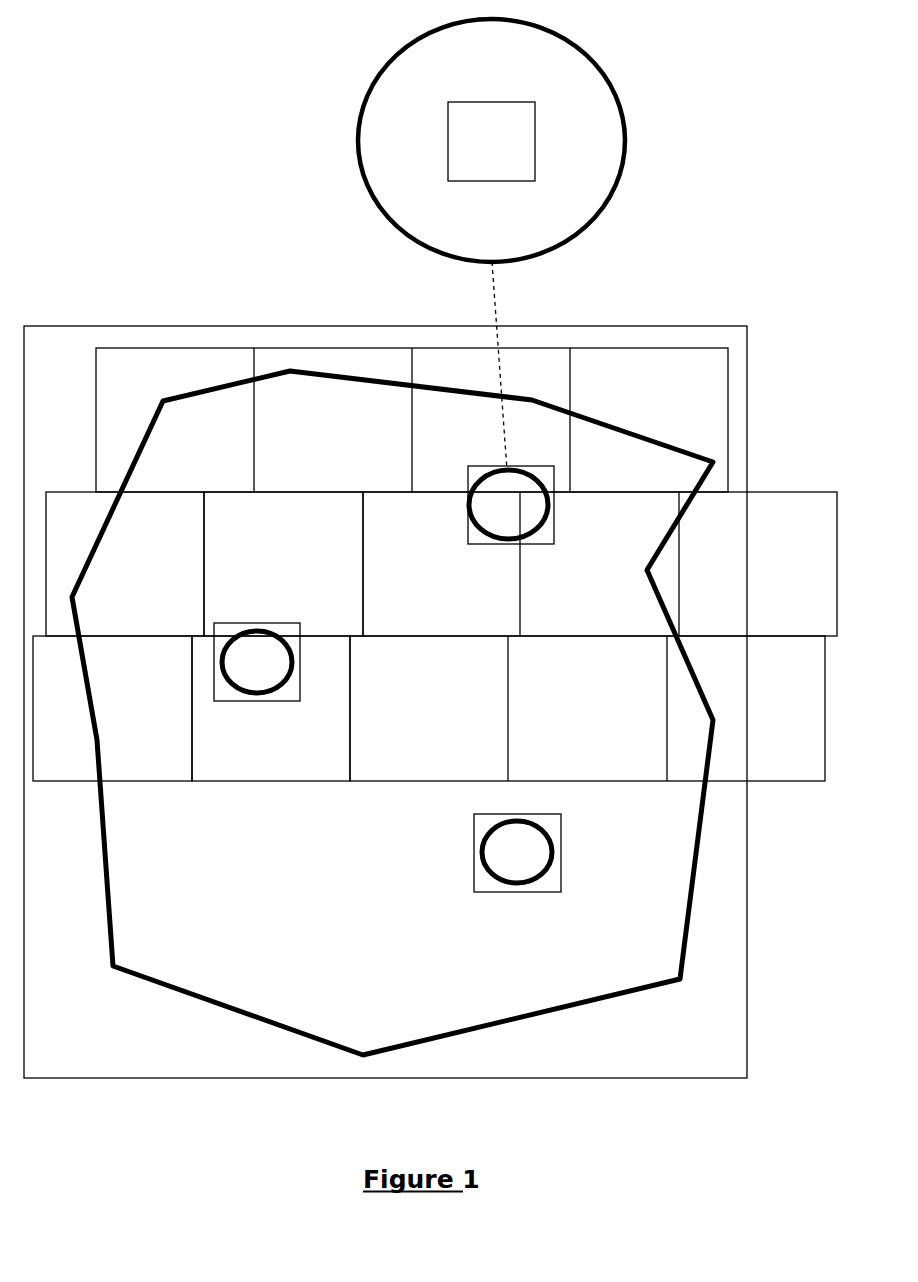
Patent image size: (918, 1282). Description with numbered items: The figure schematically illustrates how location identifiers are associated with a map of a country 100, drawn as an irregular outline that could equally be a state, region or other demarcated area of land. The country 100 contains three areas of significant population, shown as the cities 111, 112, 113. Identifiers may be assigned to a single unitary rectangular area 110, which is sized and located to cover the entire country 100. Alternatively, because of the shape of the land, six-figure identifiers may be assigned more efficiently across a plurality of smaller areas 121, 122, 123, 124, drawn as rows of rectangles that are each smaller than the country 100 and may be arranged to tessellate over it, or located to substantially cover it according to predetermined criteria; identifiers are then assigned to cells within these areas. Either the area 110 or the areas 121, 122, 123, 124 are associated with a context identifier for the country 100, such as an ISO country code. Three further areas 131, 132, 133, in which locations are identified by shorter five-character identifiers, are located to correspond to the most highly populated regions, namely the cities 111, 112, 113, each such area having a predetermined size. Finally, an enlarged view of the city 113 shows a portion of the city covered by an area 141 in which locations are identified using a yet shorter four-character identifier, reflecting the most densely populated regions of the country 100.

The country 100 is at (392, 713).
The rectangular area 110 is at (385, 689).
The city 111 is at (257, 662).
The city 112 is at (491, 279).
The city 113 is at (517, 852).
The area 121 is at (125, 564).
The area 122 is at (283, 564).
The area 123 is at (112, 708).
The area 124 is at (271, 708).
The area 131 is at (255, 712).
The area 132 is at (503, 555).
The area 133 is at (492, 903).
The area 141 is at (492, 191).